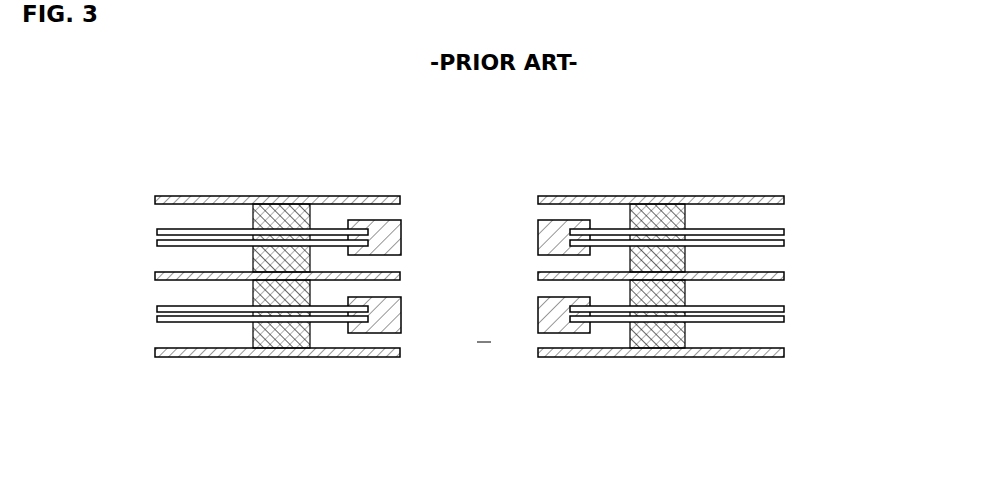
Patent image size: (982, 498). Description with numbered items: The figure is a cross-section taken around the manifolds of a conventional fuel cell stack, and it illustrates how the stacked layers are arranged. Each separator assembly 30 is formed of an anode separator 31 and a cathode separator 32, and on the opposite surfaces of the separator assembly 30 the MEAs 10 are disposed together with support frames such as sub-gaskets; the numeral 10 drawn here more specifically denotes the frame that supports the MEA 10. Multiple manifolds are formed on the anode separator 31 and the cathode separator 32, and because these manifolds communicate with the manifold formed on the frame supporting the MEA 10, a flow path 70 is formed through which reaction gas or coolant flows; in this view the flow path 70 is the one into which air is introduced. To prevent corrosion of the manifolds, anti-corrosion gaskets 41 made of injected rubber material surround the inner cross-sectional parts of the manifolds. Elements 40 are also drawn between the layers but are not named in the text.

The MEA 10 is at (155, 198).
The separator assembly 30 is at (466, 279).
The anode separator 31 is at (157, 231).
The cathode separator 32 is at (157, 244).
The spacer 40 is at (253, 216).
The anti-corrosion gasket 41 is at (381, 232).
The flow path 70 is at (483, 344).